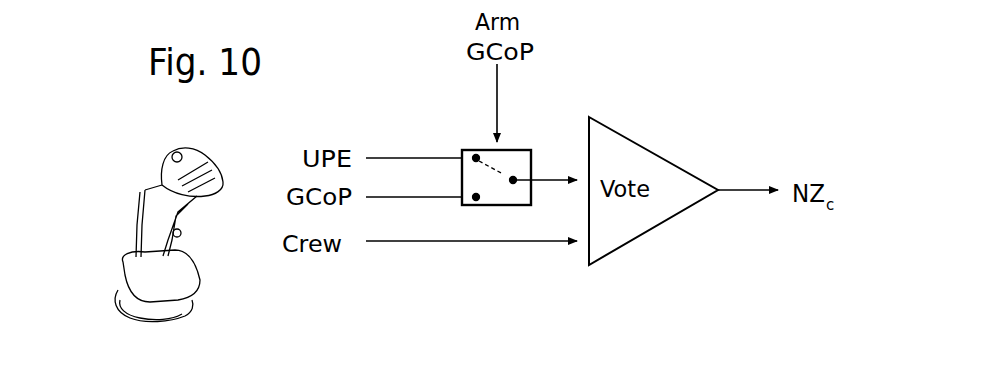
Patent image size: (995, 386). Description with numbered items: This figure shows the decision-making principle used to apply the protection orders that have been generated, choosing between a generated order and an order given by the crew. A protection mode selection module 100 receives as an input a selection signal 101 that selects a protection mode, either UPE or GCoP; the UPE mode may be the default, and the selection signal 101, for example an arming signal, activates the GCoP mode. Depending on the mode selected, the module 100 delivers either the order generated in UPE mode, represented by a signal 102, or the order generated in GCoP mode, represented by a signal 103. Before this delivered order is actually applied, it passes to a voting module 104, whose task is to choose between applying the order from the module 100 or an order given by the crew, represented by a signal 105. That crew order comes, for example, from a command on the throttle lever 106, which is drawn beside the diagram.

The protection mode selection module 100 is at (518, 150).
The selection signal 101 is at (500, 87).
The signal representing the order generated in UPE mode 102 is at (435, 158).
The signal representing the order generated in GCoP mode 103 is at (437, 197).
The voting module 104 is at (645, 148).
The crew order signal 105 is at (488, 242).
The throttle lever 106 is at (148, 188).